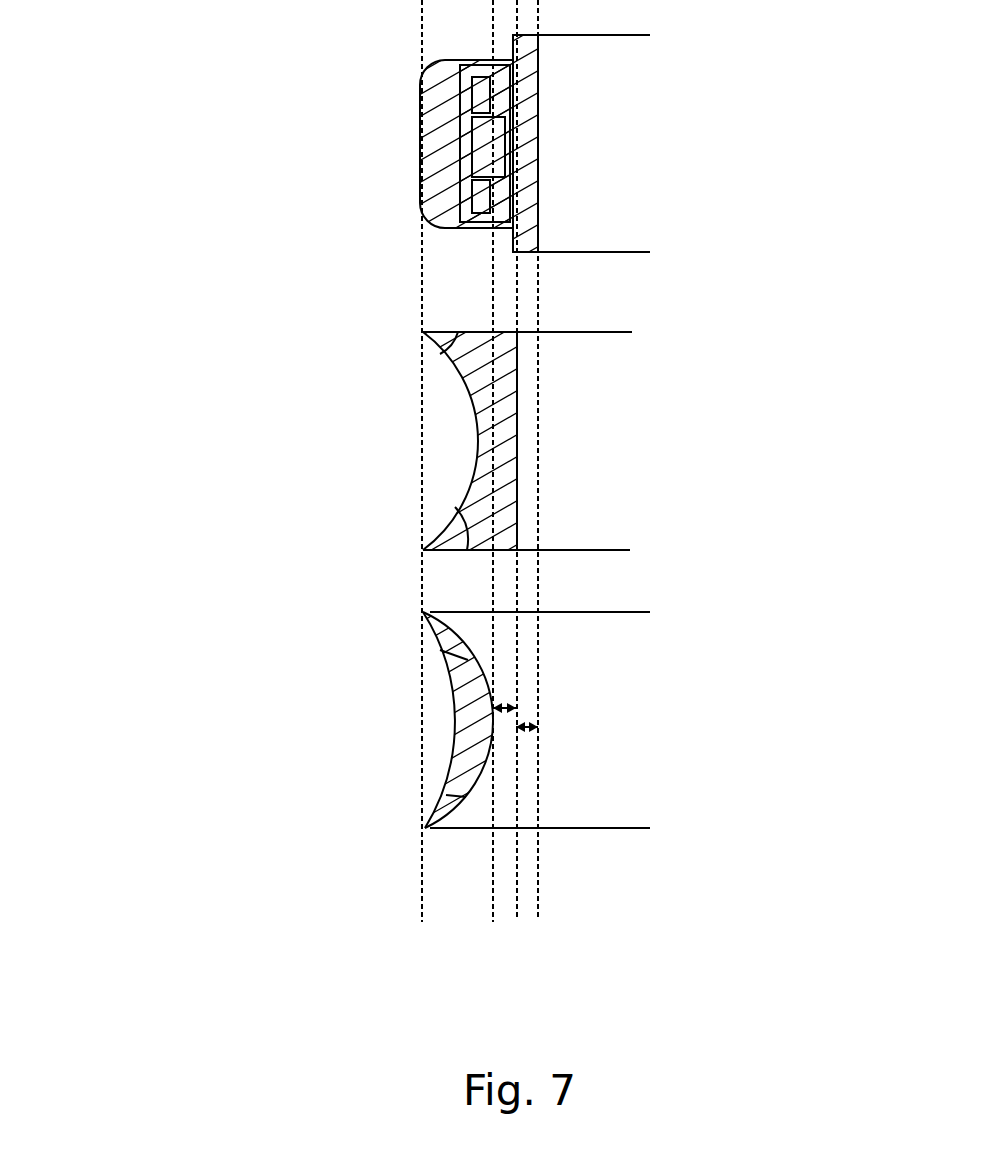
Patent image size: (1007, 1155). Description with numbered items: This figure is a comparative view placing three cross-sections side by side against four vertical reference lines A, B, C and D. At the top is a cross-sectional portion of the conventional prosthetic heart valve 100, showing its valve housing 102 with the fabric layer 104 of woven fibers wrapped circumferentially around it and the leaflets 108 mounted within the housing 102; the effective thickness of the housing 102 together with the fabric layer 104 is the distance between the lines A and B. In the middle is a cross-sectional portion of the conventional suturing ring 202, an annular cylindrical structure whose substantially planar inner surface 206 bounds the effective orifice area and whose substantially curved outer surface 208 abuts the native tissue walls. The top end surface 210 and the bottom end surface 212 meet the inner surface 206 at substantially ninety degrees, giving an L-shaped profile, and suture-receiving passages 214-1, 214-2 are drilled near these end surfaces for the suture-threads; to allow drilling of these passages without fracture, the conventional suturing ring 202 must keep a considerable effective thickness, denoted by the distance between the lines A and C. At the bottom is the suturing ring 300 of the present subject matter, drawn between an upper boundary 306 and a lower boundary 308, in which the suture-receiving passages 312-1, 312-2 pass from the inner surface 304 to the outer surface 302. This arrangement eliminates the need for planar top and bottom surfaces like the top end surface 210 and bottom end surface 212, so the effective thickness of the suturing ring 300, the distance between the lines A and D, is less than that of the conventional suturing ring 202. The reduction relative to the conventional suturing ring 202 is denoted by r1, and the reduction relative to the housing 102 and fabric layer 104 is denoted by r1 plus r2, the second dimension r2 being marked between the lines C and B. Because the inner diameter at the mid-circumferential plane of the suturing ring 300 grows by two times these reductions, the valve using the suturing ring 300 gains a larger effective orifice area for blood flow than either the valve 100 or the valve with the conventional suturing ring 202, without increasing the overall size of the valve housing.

The conventional prosthetic heart valve 100 is at (322, 61).
The valve housing 102 is at (518, 85).
The fabric layer 104 is at (440, 85).
The leaflets 108 is at (487, 138).
The conventional suturing ring 202 is at (305, 348).
The inner surface 206 is at (515, 440).
The outer surface 208 is at (477, 423).
The top end surface 210 is at (440, 333).
The bottom end surface 212 is at (497, 550).
The suture-receiving passage 214-1 is at (475, 350).
The suture-receiving passage 214-2 is at (470, 540).
The suturing ring 300 is at (285, 704).
The outer surface 302 is at (455, 740).
The inner surface 304 is at (493, 752).
The top edge 306 is at (428, 613).
The bottom edge 308 is at (428, 828).
The suture-receiving passage 312-1 is at (450, 655).
The suture-receiving passage 312-2 is at (457, 787).
The reduction in effective thickness r1 is at (508, 703).
The additional reduction in effective thickness r2 is at (528, 722).
The line A is at (420, 903).
The line B is at (538, 903).
The line C is at (517, 912).
The line D is at (492, 912).